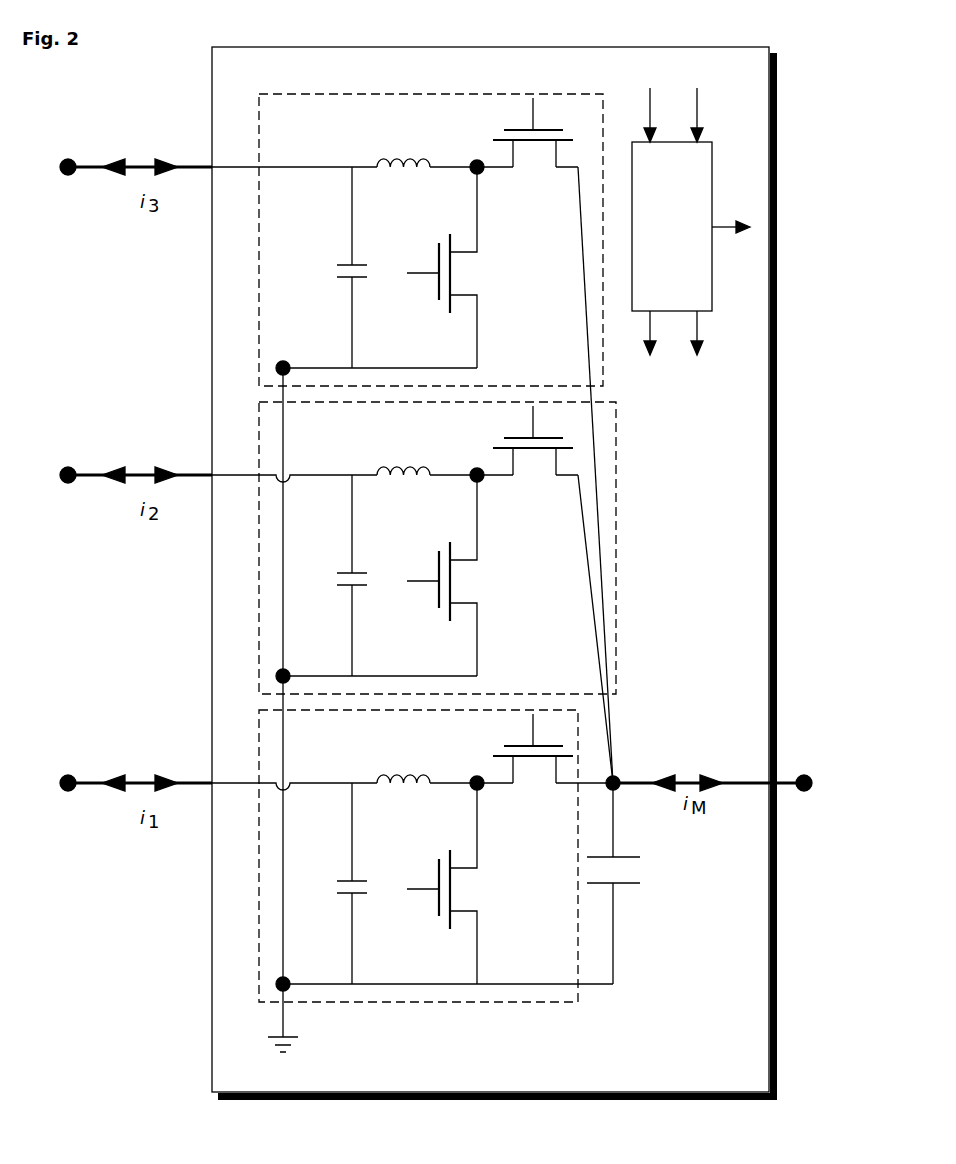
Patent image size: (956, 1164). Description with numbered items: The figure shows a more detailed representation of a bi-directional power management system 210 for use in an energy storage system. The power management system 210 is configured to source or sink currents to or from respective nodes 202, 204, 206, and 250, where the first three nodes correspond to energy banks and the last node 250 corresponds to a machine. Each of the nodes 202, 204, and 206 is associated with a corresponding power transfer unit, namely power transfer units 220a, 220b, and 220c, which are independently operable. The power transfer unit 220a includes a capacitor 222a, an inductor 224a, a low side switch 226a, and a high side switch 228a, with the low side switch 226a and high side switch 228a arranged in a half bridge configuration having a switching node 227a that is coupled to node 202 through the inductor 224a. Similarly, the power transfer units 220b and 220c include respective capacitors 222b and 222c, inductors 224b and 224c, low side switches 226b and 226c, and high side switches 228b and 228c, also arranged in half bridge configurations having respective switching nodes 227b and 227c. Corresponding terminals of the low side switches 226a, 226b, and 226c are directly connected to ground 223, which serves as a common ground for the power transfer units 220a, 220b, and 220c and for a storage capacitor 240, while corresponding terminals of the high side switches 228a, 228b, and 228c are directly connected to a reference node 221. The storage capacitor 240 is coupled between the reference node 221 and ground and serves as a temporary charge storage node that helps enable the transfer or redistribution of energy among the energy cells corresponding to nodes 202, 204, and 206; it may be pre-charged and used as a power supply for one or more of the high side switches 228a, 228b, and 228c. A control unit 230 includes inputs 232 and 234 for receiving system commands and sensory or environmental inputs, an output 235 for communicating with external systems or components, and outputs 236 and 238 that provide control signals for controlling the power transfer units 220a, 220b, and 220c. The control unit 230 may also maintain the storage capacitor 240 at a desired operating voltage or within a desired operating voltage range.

The node 202 is at (68, 772).
The node 204 is at (68, 464).
The node 206 is at (68, 156).
The power management system 210 is at (494, 1079).
The power transfer unit 220a is at (323, 753).
The power transfer unit 220b is at (323, 445).
The power transfer unit 220c is at (323, 137).
The reference node 221 is at (615, 776).
The capacitor 222a is at (345, 899).
The capacitor 222b is at (345, 591).
The capacitor 222c is at (345, 283).
The ground 223 is at (280, 1016).
The inductor 224a is at (401, 771).
The inductor 224b is at (401, 463).
The inductor 224c is at (401, 155).
The low side switch 226a is at (478, 911).
The low side switch 226b is at (478, 603).
The low side switch 226c is at (478, 295).
The switching node 227a is at (484, 786).
The switching node 227b is at (484, 478).
The switching node 227c is at (484, 170).
The high side switch 228a is at (517, 743).
The high side switch 228b is at (517, 435).
The high side switch 228c is at (517, 127).
The control unit 230 is at (655, 282).
The input 232 is at (650, 88).
The input 234 is at (697, 88).
The output 235 is at (730, 234).
The output 236 is at (652, 360).
The output 238 is at (699, 360).
The storage capacitor 240 is at (630, 886).
The node 250 is at (805, 772).